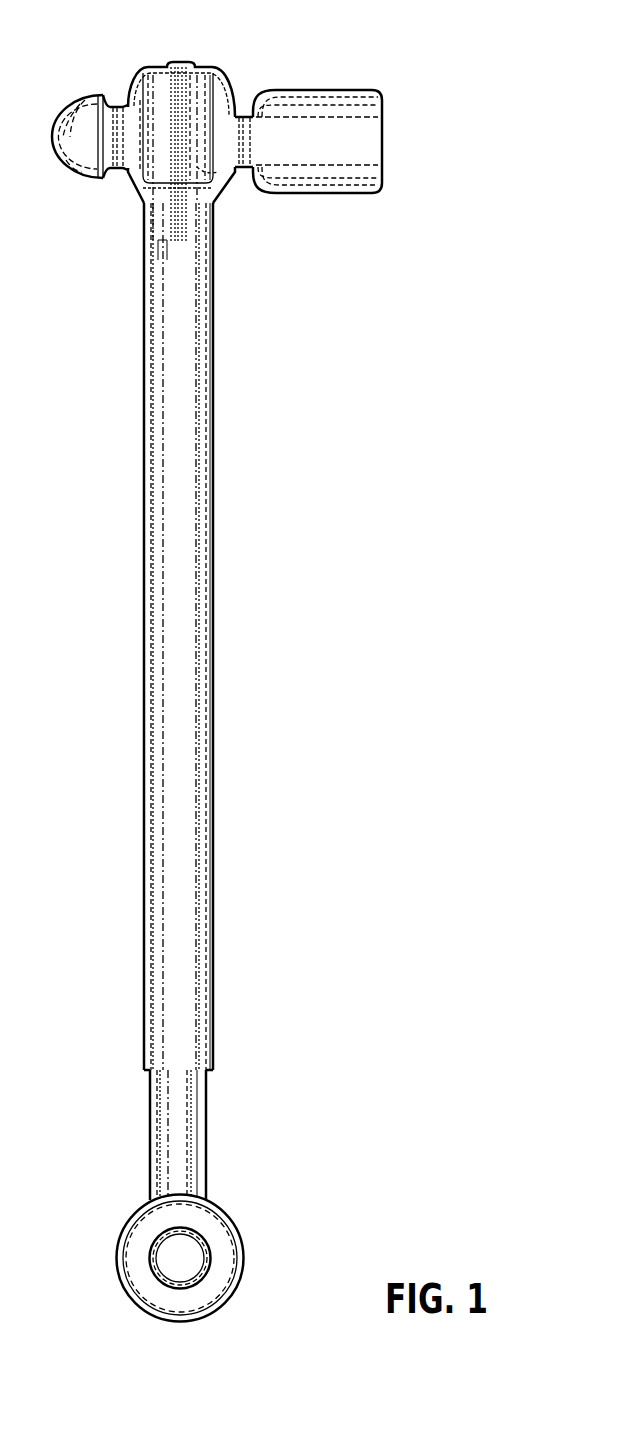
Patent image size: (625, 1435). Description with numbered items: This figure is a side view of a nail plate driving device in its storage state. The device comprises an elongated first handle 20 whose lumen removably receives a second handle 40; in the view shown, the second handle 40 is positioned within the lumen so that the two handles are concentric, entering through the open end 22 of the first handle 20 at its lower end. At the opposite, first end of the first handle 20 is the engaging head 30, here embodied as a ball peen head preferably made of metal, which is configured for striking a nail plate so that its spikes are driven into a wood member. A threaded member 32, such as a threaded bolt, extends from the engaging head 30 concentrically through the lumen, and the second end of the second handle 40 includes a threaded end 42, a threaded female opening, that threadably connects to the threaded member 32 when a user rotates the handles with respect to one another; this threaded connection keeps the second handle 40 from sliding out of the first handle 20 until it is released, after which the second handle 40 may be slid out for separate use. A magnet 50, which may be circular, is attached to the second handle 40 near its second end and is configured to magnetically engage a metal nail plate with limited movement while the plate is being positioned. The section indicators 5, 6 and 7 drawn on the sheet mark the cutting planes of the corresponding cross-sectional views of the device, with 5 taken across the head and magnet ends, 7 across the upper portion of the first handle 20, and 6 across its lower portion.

The section line 5- 5 is at (142, 37).
The section line 6- 6 is at (130, 979).
The section line 7- 7 is at (130, 255).
The first handle 20 is at (215, 385).
The open end 22 is at (213, 1072).
The engaging head 30 is at (384, 90).
The threaded member 32 is at (229, 167).
The second handle 40 is at (207, 1132).
The threaded end 42 is at (135, 190).
The magnet 50 is at (247, 1242).